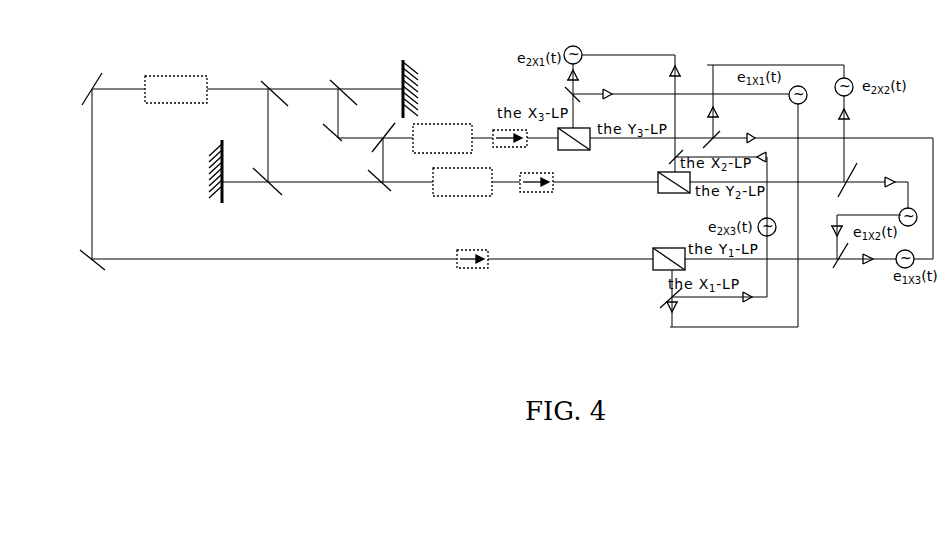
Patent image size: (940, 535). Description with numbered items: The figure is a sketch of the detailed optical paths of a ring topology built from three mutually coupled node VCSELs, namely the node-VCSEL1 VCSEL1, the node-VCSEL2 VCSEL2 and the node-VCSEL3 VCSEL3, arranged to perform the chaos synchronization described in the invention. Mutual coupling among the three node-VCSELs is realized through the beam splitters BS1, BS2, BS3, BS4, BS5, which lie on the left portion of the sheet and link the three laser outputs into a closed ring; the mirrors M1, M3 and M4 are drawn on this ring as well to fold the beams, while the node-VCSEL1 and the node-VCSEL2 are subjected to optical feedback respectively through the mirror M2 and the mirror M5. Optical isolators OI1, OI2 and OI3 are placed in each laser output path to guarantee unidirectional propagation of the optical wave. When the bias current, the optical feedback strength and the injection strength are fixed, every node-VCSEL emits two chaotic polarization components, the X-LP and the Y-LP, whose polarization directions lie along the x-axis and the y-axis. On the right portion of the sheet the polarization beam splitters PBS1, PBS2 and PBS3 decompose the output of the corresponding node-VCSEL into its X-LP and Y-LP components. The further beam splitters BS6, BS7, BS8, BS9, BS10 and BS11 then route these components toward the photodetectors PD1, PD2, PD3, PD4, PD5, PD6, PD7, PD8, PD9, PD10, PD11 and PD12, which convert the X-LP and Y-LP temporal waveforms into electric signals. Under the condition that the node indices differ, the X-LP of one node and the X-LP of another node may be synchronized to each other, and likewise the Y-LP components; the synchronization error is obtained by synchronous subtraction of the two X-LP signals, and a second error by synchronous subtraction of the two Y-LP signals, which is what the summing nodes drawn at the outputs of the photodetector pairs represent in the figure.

The mirror M1 is at (84, 88).
The mirror 2 M2 is at (86, 262).
The mirror M3 is at (417, 80).
The mirror M4 is at (336, 144).
The mirror 5 M5 is at (222, 203).
The beam splitter BS1 is at (274, 85).
The beam splitter BS2 is at (344, 84).
The beam splitter BS3 is at (377, 135).
The beam splitter BS4 is at (378, 188).
The beam splitter BS5 is at (266, 188).
The beam splitter BS6 is at (561, 94).
The beam splitter BS7 is at (701, 135).
The beam splitter BS8 is at (659, 156).
The beam splitter BS9 is at (855, 183).
The beam splitter BS10 is at (655, 298).
The beam splitter BS11 is at (824, 262).
The node- VCSEL1 is at (176, 89).
The node- VCSEL2 is at (462, 182).
The node- VCSEL3 is at (442, 138).
The optical isolator OI1 is at (472, 269).
The optical isolator OI2 is at (536, 193).
The optical isolator OI3 is at (510, 149).
The polarization beam splitter PBS1 is at (671, 251).
The polarization beam splitter PBS2 is at (673, 190).
The polarization beam splitter PBS3 is at (572, 148).
The photodetector PD1 is at (589, 80).
The photodetector PD2 is at (624, 104).
The photodetector PD3 is at (689, 66).
The photodetector PD4 is at (756, 130).
The photodetector PD5 is at (727, 109).
The photodetector PD6 is at (775, 156).
The photodetector PD7 is at (898, 173).
The photodetector PD8 is at (859, 116).
The photodetector PD9 is at (659, 313).
The photodetector PD10 is at (751, 308).
The photodetector PD11 is at (820, 239).
The photodetector PD12 is at (861, 269).